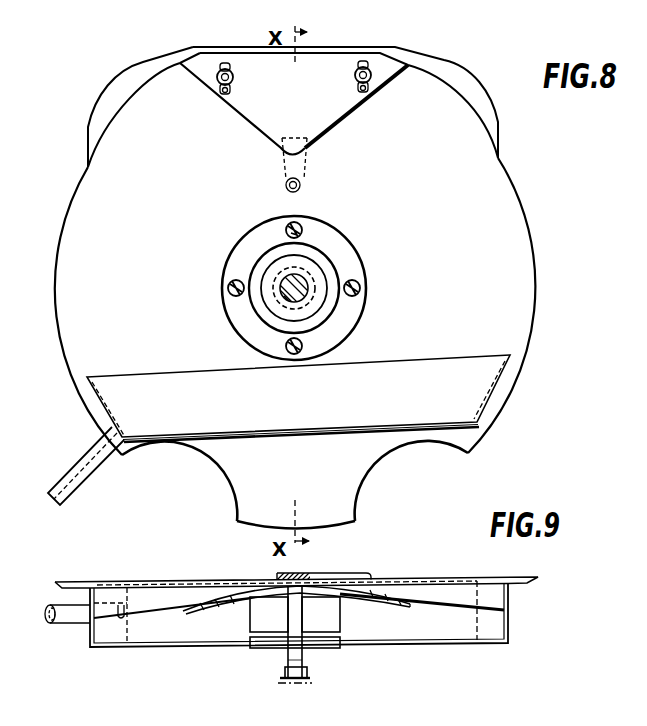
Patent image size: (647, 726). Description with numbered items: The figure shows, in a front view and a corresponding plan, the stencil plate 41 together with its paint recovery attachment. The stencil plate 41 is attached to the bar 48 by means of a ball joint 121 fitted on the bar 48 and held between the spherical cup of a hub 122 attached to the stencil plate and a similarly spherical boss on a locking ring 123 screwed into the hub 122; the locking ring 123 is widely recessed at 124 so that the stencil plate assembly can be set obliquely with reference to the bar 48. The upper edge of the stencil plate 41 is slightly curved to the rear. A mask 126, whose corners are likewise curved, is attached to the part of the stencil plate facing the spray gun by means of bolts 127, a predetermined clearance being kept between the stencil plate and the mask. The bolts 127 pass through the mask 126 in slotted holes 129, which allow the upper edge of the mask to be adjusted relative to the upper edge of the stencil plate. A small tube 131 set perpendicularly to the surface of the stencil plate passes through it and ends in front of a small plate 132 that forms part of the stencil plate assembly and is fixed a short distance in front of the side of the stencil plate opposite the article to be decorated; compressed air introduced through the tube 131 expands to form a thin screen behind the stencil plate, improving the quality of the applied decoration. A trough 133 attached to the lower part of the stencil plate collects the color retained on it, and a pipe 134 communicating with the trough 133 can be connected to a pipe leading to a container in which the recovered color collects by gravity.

In FIG. 8, the stencil plate 41 is at (493, 257).
In FIG. 9, the stencil plate 41 is at (421, 580).
In FIG. 8, the bar 48 is at (286, 282).
In FIG. 9, the bar 48 is at (292, 655).
In FIG. 8, the ball joint 121 is at (305, 271).
In FIG. 8, the hub 122 is at (341, 305).
In FIG. 9, the hub 122 is at (333, 605).
In FIG. 8, the locking ring 123 is at (333, 267).
In FIG. 9, the locking ring 123 is at (323, 644).
In FIG. 8, the recess 124 is at (267, 297).
In FIG. 8, the mask 126 is at (322, 128).
In FIG. 9, the mask 126 is at (227, 603).
In FIG. 8, the bolts 127 is at (218, 76).
In FIG. 8, the slotted holes 129 is at (222, 92).
In FIG. 8, the small tube 131 is at (300, 185).
In FIG. 9, the small tube 131 is at (292, 654).
In FIG. 9, the small plate 132 is at (303, 573).
In FIG. 8, the trough 133 is at (470, 370).
In FIG. 9, the trough 133 is at (505, 610).
In FIG. 8, the pipe 134 is at (85, 468).
In FIG. 9, the pipe 134 is at (77, 618).